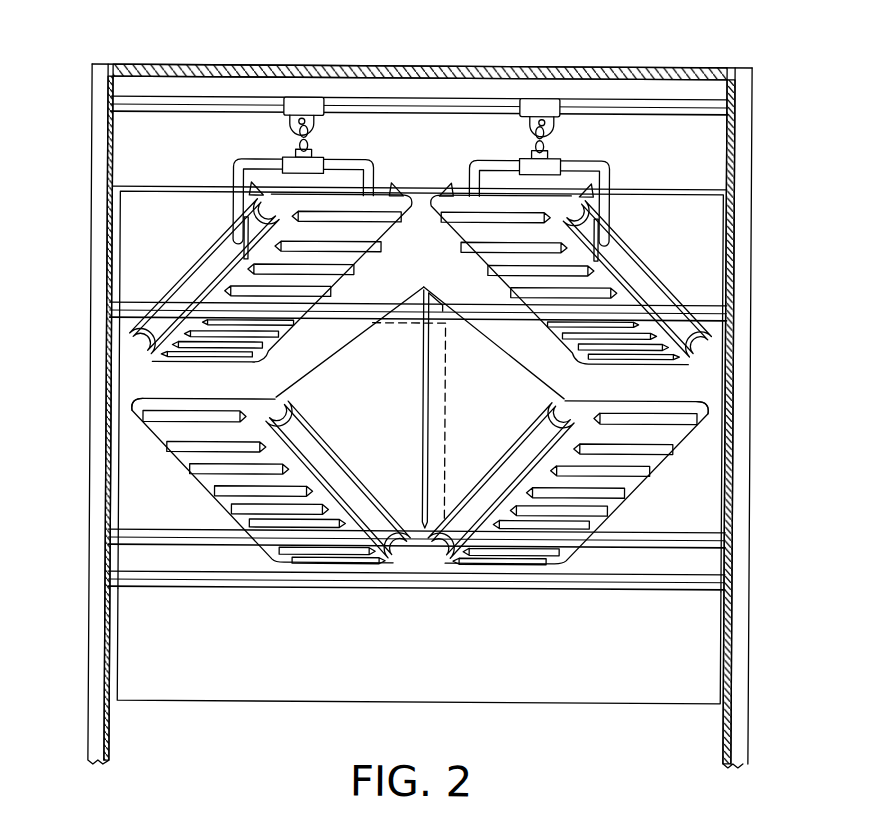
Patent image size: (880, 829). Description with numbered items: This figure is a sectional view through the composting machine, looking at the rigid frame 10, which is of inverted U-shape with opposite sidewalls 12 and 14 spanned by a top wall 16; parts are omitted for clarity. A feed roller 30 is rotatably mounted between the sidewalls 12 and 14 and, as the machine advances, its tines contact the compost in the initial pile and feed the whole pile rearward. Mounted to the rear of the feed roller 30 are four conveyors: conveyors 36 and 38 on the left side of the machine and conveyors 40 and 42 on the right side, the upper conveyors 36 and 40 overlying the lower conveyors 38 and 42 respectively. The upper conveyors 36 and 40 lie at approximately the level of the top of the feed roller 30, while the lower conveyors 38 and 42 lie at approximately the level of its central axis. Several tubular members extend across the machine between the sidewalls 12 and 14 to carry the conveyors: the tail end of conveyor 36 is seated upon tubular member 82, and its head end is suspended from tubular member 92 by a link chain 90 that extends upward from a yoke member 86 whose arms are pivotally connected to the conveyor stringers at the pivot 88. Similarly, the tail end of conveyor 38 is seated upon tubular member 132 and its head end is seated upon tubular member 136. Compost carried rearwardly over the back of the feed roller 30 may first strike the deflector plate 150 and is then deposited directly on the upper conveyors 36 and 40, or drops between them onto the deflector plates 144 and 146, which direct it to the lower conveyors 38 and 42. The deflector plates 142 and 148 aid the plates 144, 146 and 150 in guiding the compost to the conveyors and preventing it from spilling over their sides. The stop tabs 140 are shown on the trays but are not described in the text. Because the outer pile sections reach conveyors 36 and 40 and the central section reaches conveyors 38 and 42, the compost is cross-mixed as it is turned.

The rigid frame 10 is at (450, 397).
The sidewall 12 is at (107, 257).
The sidewall 14 is at (765, 198).
The top wall 16 is at (629, 66).
The feed roller 30 is at (696, 640).
The conveyor 36 is at (363, 258).
The conveyor 38 is at (182, 467).
The conveyor 40 is at (456, 233).
The conveyor 42 is at (640, 468).
The tubular member 82 is at (513, 308).
The yoke member 86 is at (362, 147).
The pivotal connection 88 is at (237, 248).
The link chain 90 is at (297, 142).
The tubular member 92 is at (372, 102).
The tubular member 132 is at (386, 533).
The tubular member 136 is at (360, 577).
The stop tab 140 is at (391, 190).
The deflector plate 142 is at (140, 395).
The deflector plate 144 is at (398, 398).
The deflector plate 146 is at (505, 398).
The deflector plate 148 is at (700, 395).
The deflector plate 150 is at (702, 157).